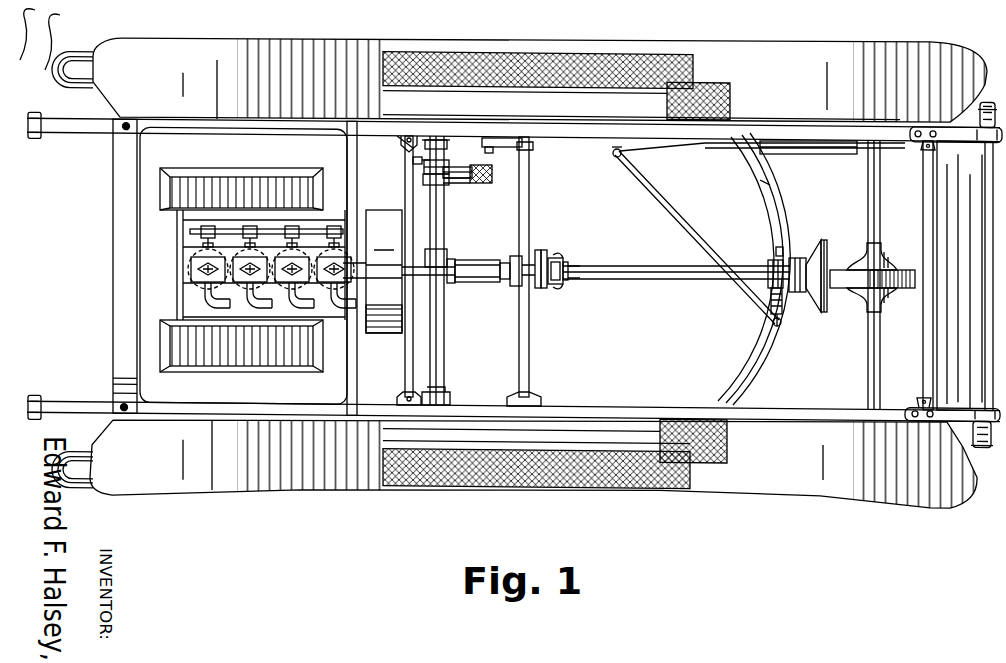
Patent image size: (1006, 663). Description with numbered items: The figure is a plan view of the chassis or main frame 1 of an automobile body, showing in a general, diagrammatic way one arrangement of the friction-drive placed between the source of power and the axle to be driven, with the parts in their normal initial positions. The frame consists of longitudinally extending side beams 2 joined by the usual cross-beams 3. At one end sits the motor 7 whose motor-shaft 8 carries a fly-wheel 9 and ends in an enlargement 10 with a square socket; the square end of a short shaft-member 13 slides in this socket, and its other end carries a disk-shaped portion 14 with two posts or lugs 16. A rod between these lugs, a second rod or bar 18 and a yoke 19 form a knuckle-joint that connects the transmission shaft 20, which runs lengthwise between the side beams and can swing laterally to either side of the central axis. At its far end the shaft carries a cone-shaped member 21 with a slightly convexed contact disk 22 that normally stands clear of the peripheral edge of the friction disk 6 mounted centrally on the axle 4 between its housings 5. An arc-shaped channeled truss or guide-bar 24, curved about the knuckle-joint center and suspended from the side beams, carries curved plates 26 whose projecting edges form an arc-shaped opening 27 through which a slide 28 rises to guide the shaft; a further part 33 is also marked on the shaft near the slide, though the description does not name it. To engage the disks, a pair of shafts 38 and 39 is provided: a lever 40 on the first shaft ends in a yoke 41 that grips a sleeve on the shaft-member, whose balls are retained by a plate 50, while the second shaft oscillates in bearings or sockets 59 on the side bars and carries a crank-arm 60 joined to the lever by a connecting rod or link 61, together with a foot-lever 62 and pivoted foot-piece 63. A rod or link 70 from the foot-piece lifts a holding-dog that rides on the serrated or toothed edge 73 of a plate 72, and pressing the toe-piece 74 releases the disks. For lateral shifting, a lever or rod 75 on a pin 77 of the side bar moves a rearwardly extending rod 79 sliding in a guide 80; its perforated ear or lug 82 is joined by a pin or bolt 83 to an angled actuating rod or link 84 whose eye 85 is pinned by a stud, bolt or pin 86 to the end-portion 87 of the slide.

The chassis or main frame 1 is at (522, 277).
The side beams 2 is at (903, 133).
The cross-beams 3 is at (405, 372).
The axle 4 is at (872, 274).
The housings 5 is at (897, 232).
The friction disk 6 is at (898, 287).
The motor 7 is at (185, 308).
The motor-shaft 8 is at (390, 289).
The fly-wheel 9 is at (383, 326).
The enlargement 10 is at (486, 286).
The shaft-member 13 is at (452, 285).
The disk-shaped portion 14 is at (560, 255).
The posts or lugs 16 is at (562, 257).
The second rod or bar 18 is at (567, 284).
The yoke 19 is at (590, 281).
The transmission shaft 20 is at (680, 280).
The cone-shaped member 21 is at (834, 277).
The contact disk 22 is at (823, 300).
The channeled truss or guide-bar 24 is at (771, 222).
The curved plates 26 is at (765, 269).
The arc-shaped opening 27 is at (780, 205).
The slide 28 is at (797, 258).
The hub 33 is at (771, 262).
The shaft 38 is at (531, 248).
The shaft 39 is at (442, 248).
The lever 40 is at (542, 289).
The yoke 41 is at (540, 250).
The plate 50 is at (552, 258).
The bearings or sockets 59 is at (440, 137).
The crank-arm 60 is at (455, 254).
The connecting rod or link 61 is at (490, 260).
The foot-lever 62 is at (455, 180).
The foot-piece 63 is at (490, 184).
The rod or link 70 is at (460, 166).
The plate 72 is at (418, 166).
The serrated or toothed edge 73 is at (425, 178).
The toe-piece 74 is at (478, 186).
The lever or rod 75 is at (493, 138).
The pin 77 is at (490, 150).
The rearwardly extending rod 79 is at (708, 148).
The guide 80 is at (846, 154).
The perforated ear or lug 82 is at (622, 155).
The pin or bolt 83 is at (613, 156).
The actuating rod or link 84 is at (683, 226).
The eye 85 is at (782, 330).
The stud, bolt or pin 86 is at (772, 323).
The end-portion 87 is at (786, 312).